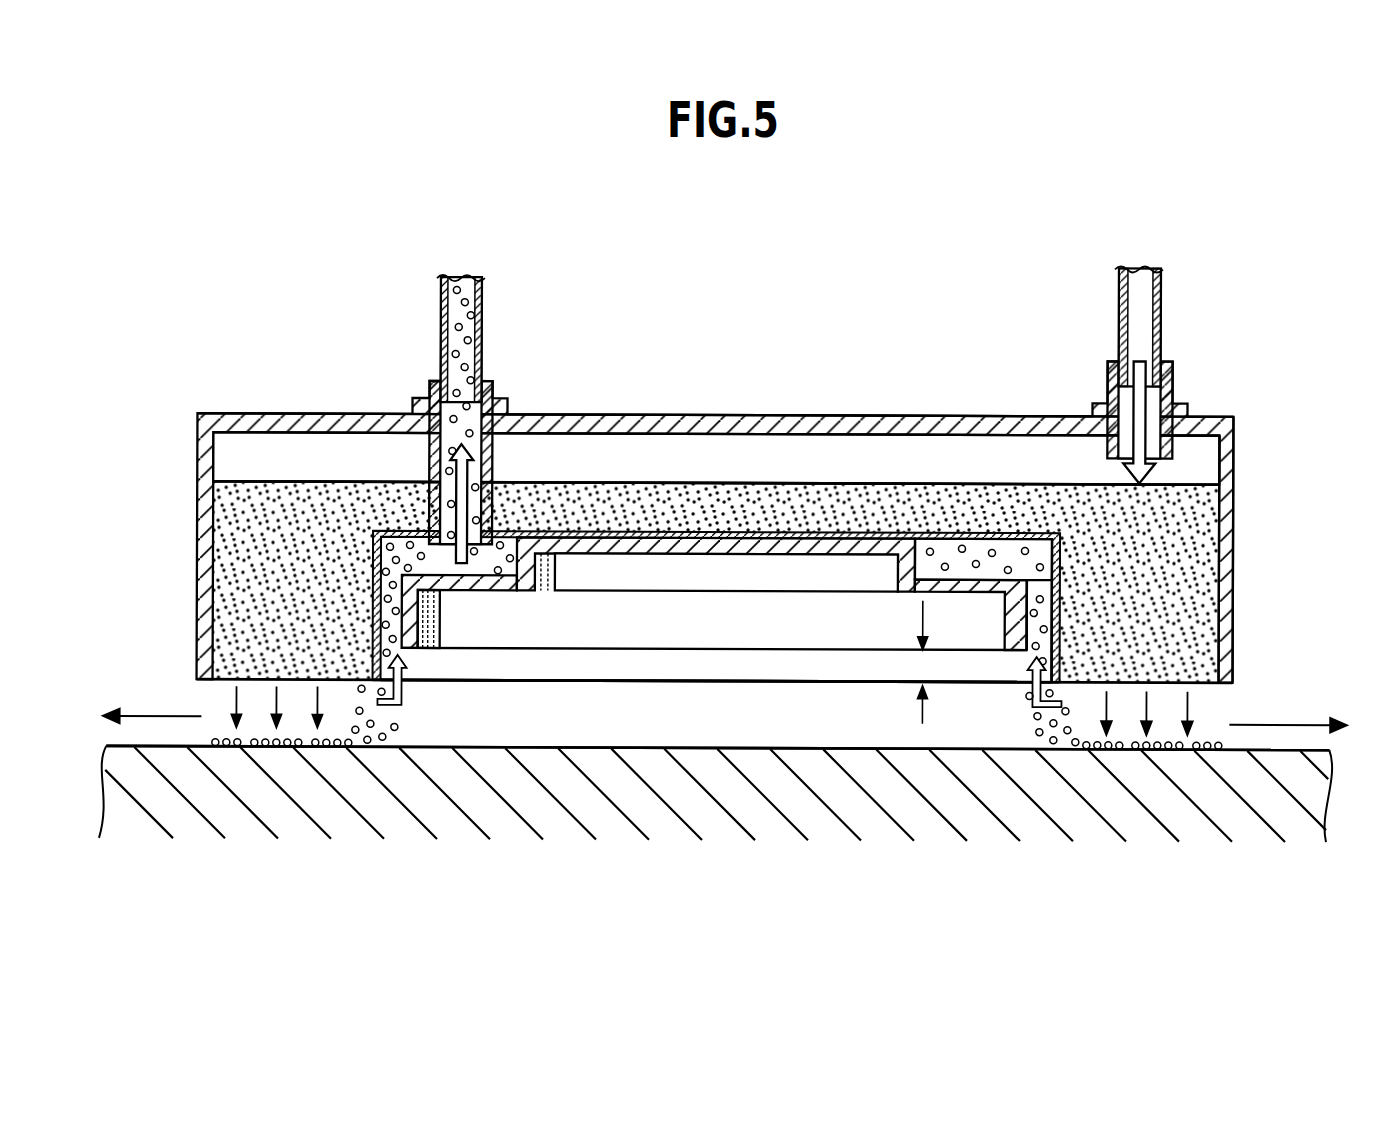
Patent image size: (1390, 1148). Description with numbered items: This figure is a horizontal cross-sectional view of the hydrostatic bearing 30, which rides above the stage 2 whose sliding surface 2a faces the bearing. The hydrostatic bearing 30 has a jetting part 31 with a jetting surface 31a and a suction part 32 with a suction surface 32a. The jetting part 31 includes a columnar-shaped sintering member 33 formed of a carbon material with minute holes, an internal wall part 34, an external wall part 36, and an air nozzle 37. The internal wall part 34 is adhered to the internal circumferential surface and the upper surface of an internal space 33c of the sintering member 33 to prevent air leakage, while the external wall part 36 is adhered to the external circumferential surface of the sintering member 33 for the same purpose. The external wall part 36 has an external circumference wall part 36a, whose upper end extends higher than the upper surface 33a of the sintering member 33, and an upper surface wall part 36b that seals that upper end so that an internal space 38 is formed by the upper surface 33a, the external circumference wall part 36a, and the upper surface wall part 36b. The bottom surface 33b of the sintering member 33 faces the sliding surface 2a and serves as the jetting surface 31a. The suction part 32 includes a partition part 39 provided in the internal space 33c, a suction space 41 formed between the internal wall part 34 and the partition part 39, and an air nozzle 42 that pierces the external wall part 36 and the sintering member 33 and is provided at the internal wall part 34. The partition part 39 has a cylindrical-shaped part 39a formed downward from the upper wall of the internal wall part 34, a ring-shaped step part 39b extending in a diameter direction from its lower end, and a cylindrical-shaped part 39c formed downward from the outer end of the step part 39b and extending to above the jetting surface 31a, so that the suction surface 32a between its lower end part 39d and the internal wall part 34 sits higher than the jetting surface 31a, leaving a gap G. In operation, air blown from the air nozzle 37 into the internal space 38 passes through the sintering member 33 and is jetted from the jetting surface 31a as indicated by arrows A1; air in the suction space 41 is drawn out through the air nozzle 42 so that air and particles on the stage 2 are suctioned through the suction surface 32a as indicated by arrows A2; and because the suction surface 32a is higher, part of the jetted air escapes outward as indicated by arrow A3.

The hydrostatic bearing 30 is at (231, 248).
The jetting part 31 is at (188, 458).
The jetting surface 31a is at (1128, 686).
The suction part 32 is at (427, 616).
The suction surface 32a is at (1028, 657).
The sintering member 33 is at (307, 517).
The upper surface 33a is at (737, 482).
The bottom surface 33b is at (716, 681).
The internal space 33c is at (760, 660).
The internal wall part 34 is at (1037, 617).
The external wall part 36 is at (958, 416).
The external circumference wall part 36a is at (1233, 457).
The upper surface wall part 36b is at (580, 415).
The air nozzle 37 is at (1160, 313).
The internal space 38 is at (657, 460).
The partition part 39 is at (485, 591).
The cylindrical-shaped part 39a is at (887, 577).
The step part 39b is at (952, 580).
The cylindrical-shaped part 39c is at (1012, 600).
The lower end part 39d is at (410, 640).
The suction space 41 is at (1043, 598).
The air nozzle 42 is at (452, 310).
The stage 2 is at (1310, 810).
The sliding surface 2a is at (150, 748).
The gap G is at (909, 662).
The arrows A1 is at (240, 698).
The arrows A2 is at (377, 712).
The arrow A3 is at (162, 716).